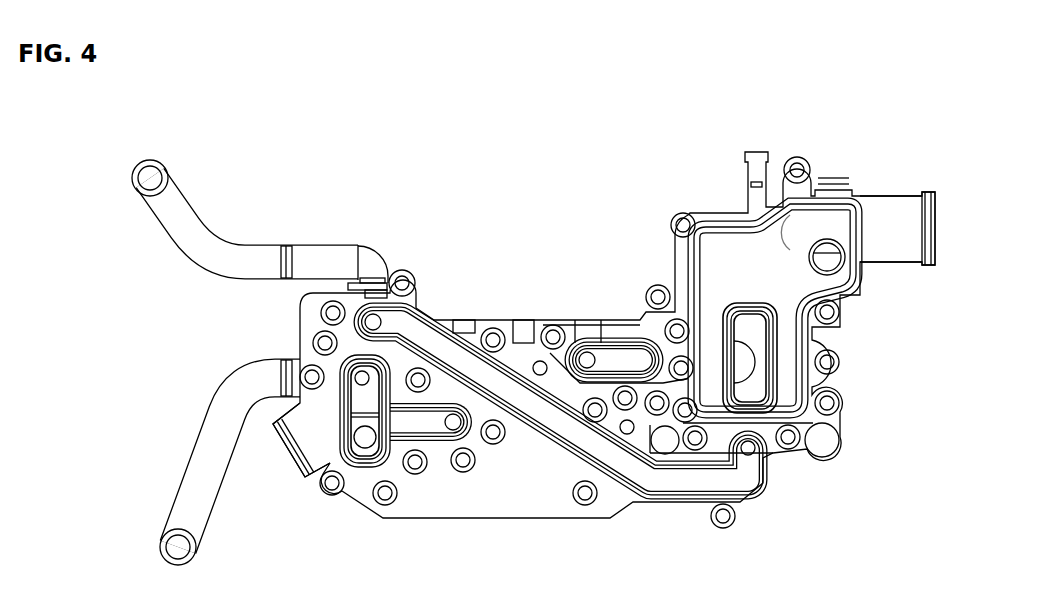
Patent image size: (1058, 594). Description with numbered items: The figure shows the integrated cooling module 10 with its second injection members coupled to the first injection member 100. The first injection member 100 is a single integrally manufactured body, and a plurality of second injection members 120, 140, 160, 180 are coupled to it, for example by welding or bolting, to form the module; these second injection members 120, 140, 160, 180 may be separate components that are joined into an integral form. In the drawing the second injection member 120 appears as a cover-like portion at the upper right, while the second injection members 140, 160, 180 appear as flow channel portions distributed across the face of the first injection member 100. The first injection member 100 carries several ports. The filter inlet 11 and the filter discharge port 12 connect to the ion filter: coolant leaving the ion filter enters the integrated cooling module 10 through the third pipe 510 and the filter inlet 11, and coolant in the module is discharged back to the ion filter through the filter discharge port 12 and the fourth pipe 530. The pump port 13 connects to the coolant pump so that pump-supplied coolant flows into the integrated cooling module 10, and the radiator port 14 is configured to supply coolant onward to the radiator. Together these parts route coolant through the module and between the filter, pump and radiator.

The integrated cooling module 10 is at (833, 130).
The filter inlet 11 is at (370, 266).
The filter discharge port 12 is at (287, 368).
The pump port 13 is at (305, 442).
The radiator port 14 is at (900, 250).
The first injection member 100 is at (500, 316).
The second injection member 120 is at (727, 235).
The second injection member 140 is at (427, 323).
The second injection member 160 is at (423, 428).
The second injection member 180 is at (617, 360).
The third pipe 510 is at (187, 208).
The fourth pipe 530 is at (188, 447).